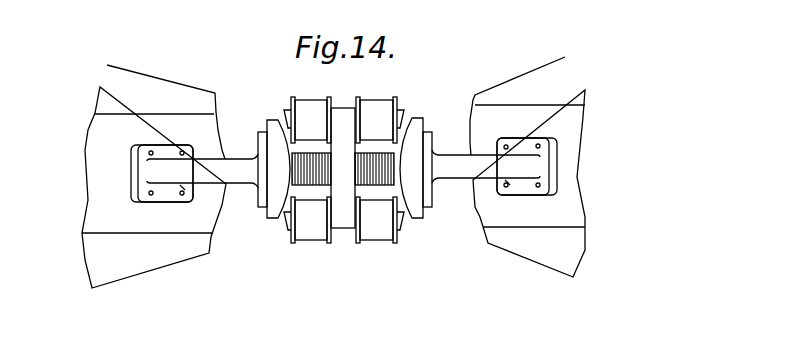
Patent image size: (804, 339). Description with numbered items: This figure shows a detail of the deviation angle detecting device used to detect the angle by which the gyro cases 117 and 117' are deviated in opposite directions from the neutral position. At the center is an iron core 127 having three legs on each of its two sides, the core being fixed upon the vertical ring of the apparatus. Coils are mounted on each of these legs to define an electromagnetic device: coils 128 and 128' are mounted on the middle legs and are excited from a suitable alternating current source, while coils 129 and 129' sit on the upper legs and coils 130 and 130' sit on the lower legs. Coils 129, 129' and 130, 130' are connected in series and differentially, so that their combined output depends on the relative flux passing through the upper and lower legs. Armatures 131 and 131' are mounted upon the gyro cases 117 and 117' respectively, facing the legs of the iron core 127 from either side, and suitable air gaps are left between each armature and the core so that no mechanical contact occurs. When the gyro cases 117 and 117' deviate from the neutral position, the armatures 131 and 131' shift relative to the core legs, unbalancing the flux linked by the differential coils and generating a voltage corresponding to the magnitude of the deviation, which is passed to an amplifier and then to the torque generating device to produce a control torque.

The gyro case 117 is at (154, 180).
The gyro case 117' is at (527, 174).
The iron core 127 is at (337, 113).
The coil 128 is at (282, 200).
The coil 128' is at (408, 192).
The coil 129 is at (307, 110).
The coil 129' is at (381, 109).
The coil 130 is at (307, 231).
The coil 130' is at (380, 231).
The armature 131 is at (210, 169).
The armature 131' is at (478, 168).